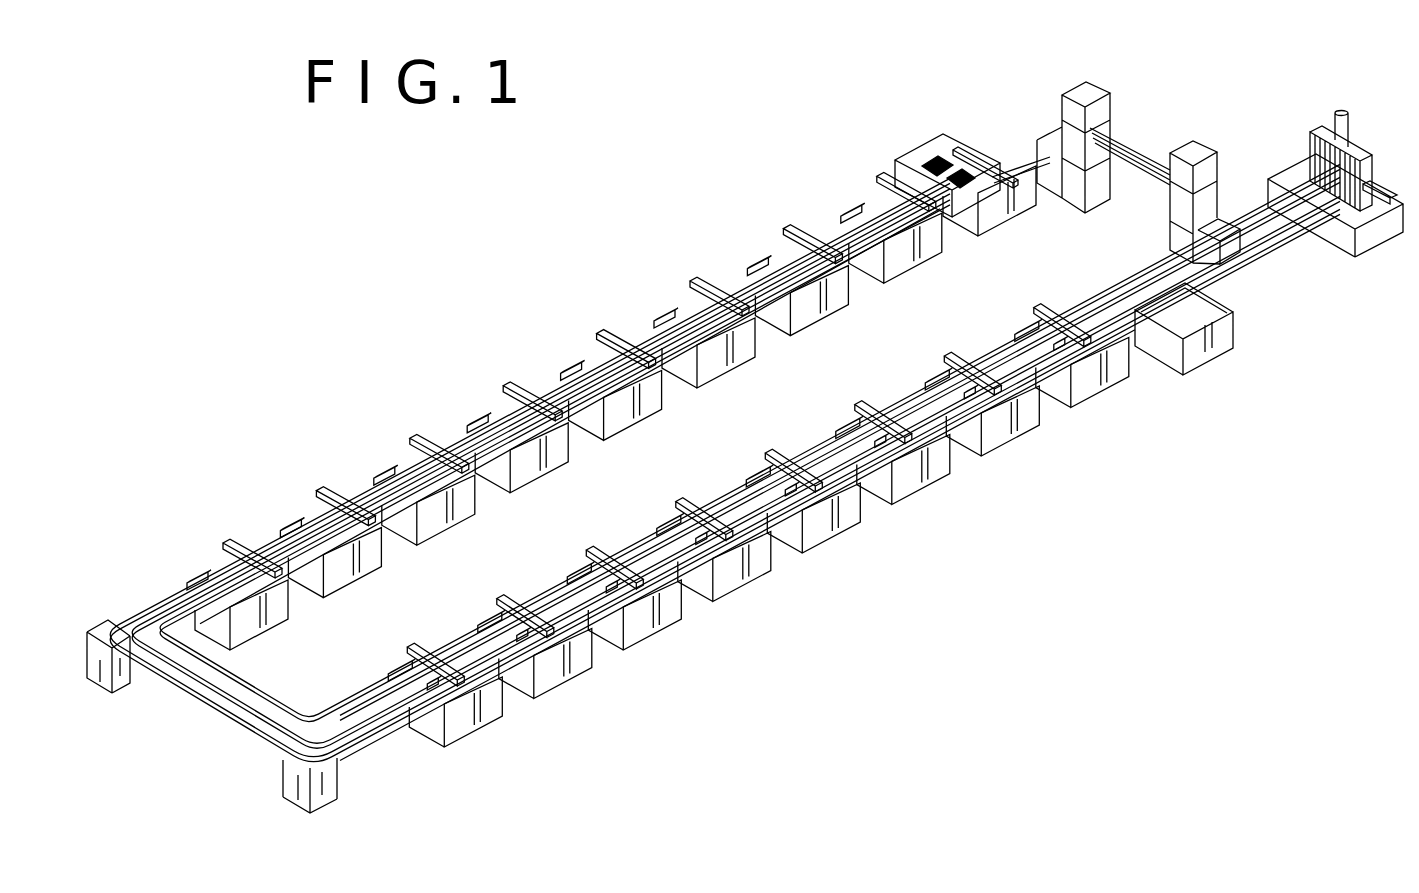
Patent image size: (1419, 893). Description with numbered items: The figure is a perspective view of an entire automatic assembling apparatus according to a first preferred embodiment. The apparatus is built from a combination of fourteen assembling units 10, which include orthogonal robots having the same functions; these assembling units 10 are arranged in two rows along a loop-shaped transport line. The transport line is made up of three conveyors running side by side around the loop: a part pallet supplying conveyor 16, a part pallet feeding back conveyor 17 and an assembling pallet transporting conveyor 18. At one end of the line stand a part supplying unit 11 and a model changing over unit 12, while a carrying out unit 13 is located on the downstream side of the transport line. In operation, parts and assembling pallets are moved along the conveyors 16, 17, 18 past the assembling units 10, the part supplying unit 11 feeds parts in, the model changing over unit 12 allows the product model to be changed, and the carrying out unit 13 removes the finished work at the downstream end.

The assembling units 10 is at (513, 432).
The part supplying unit 11 is at (1292, 157).
The model changing over unit 12 is at (1218, 348).
The carrying out unit 13 is at (908, 162).
The part pallet supplying conveyor 16 is at (195, 693).
The part pallet feeding back conveyor 17 is at (237, 723).
The assembling pallet transporting conveyor 18 is at (253, 683).